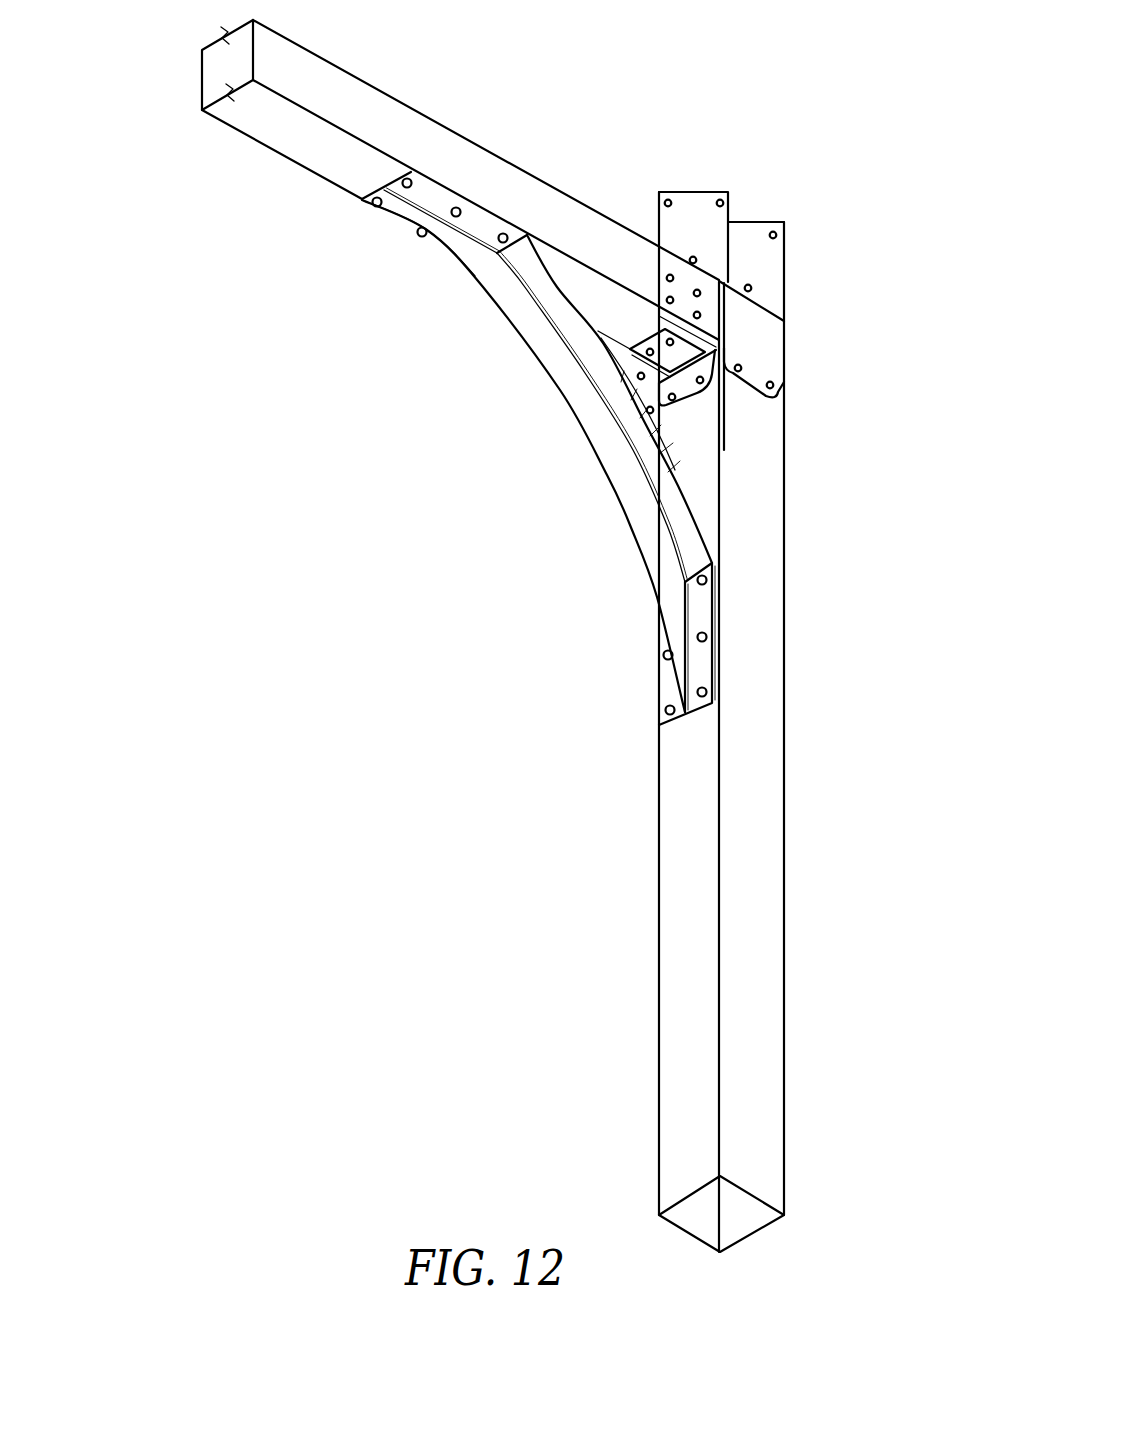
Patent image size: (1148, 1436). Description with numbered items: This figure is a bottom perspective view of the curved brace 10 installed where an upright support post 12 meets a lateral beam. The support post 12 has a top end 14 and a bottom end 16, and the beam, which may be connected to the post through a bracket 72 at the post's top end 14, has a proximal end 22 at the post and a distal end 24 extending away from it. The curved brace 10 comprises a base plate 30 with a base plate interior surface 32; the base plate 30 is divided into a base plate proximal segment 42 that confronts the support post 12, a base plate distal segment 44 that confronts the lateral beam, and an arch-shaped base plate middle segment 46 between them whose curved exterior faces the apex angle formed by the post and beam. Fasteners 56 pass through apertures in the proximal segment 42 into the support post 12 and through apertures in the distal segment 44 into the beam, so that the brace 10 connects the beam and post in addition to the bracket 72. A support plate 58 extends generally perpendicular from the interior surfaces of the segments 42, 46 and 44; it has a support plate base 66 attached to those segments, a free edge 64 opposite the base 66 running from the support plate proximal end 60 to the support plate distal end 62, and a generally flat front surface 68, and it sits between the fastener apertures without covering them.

The curved brace 10 is at (537, 425).
The support post 12 is at (760, 562).
The top end 14 is at (788, 348).
The bottom end 16 is at (767, 1202).
The proximal end 22 is at (710, 282).
The distal end 24 is at (222, 70).
The base plate 30 is at (550, 300).
The base plate interior surface 32 is at (583, 330).
The base plate proximal segment 42 is at (703, 658).
The base plate distal segment 44 is at (423, 200).
The base plate middle segment 46 is at (657, 470).
The fastener 56 is at (464, 212).
The support plate 58 is at (643, 532).
The support plate proximal end 60 is at (688, 617).
The support plate distal end 62 is at (468, 259).
The free edge 64 is at (607, 474).
The support plate base 66 is at (583, 370).
The front surface 68 is at (660, 581).
The bracket 72 is at (750, 336).